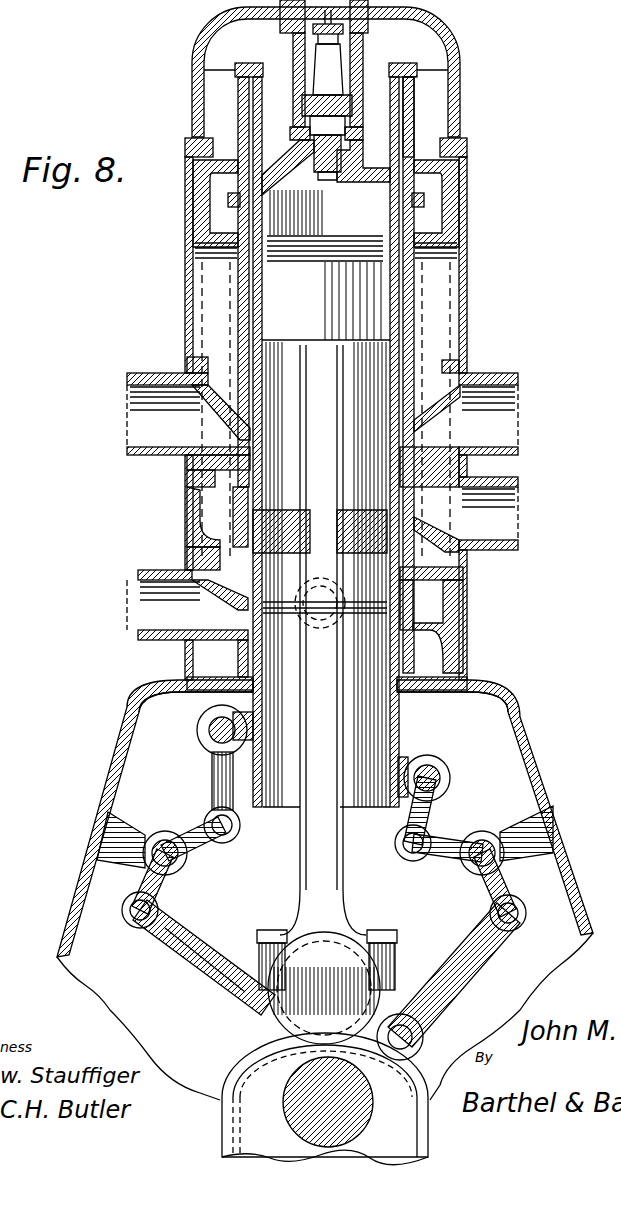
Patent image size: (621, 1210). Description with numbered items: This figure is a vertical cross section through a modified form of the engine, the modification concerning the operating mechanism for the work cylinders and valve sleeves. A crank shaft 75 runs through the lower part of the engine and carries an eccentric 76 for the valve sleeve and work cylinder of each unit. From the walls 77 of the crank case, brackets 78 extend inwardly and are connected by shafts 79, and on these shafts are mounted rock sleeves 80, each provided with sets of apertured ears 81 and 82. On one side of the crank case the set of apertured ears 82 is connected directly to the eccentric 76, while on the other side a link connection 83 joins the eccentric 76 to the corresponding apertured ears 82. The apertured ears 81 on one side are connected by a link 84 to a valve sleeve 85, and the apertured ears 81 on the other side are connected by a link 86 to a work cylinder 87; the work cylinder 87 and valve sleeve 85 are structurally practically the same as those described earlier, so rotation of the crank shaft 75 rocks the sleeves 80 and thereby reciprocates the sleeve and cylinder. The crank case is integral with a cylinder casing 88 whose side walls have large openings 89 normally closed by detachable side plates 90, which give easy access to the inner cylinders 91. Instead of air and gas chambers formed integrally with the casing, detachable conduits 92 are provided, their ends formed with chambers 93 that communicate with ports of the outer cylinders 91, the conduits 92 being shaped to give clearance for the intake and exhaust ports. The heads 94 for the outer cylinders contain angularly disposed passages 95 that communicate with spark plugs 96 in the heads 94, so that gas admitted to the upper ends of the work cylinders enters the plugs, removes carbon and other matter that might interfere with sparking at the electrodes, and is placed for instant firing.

The crank shaft 75 is at (355, 1107).
The eccentric 76 is at (187, 1010).
The walls of the crank case 77 is at (70, 920).
The brackets 78 is at (130, 837).
The shafts 79 is at (165, 840).
The rock sleeves 80 is at (180, 863).
The apertured ears 81 is at (200, 850).
The apertured ears 82 is at (153, 890).
The link connection 83 is at (473, 973).
The link 84 is at (217, 768).
The valve sleeve 85 is at (400, 693).
The link 86 is at (433, 813).
The work cylinder 87 is at (360, 797).
The cylinder casing 88 is at (466, 108).
The openings 89 is at (453, 163).
The detachable side plates 90 is at (467, 230).
The cylinders 91 is at (410, 117).
The detachable conduits 92 is at (437, 305).
The chambers 93 is at (420, 185).
The heads 94 is at (413, 100).
The angularly disposed passages 95 is at (310, 177).
The spark plugs 96 is at (345, 96).